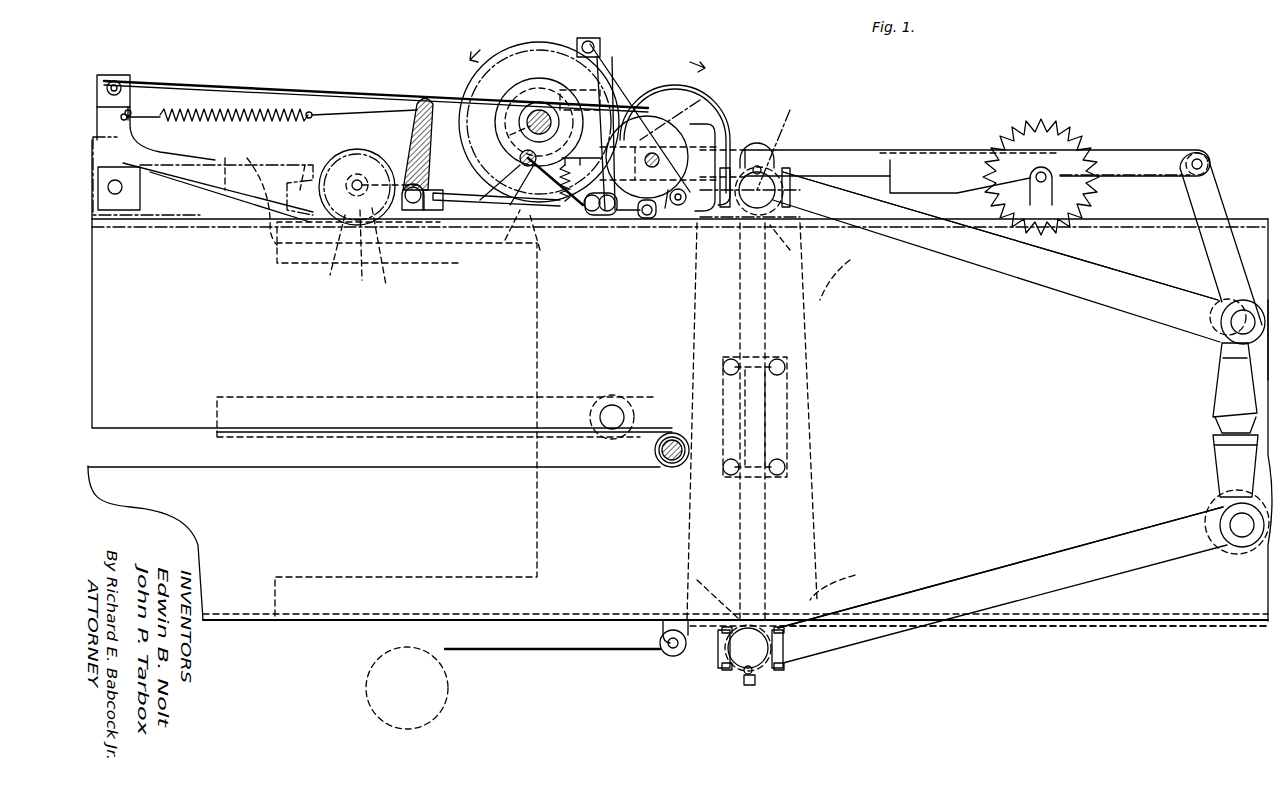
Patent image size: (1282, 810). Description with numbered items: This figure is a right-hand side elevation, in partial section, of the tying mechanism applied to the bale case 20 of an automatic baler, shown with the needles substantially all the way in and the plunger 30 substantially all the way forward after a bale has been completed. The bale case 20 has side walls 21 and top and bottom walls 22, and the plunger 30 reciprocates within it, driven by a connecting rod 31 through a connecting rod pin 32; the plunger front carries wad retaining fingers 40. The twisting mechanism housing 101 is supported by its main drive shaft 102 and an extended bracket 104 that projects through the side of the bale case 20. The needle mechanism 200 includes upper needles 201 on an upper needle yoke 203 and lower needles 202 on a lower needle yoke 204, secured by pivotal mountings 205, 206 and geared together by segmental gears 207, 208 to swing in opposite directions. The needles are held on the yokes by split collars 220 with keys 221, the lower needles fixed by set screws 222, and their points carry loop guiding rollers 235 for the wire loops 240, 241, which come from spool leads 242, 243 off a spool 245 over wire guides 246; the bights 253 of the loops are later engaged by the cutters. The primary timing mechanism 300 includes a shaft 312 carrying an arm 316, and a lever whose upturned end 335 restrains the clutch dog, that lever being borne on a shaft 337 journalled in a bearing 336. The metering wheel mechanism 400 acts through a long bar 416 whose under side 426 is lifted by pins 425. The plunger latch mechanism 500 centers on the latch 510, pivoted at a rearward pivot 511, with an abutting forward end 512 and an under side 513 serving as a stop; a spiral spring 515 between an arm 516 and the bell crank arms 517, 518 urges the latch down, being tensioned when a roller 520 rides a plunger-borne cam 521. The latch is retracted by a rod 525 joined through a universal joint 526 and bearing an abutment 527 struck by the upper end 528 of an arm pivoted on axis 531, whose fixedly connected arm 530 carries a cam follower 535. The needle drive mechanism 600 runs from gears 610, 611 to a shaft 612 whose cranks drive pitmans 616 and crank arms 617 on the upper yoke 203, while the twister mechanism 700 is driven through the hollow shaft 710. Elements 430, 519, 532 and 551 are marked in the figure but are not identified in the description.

The bale case 20 is at (978, 636).
The side walls 21 is at (548, 284).
The top and bottom walls 22 is at (1204, 340).
The plunger 30 is at (530, 458).
The connecting rod 31 is at (365, 436).
The connecting rod pin 32 is at (612, 395).
The wad retaining fingers 40 is at (845, 265).
The housing of the twisting mechanism 101 is at (677, 433).
The main drive shaft 102 is at (665, 462).
The extended bracket 104 is at (660, 452).
The needle mechanism 200 is at (808, 405).
The upper needles 201 is at (786, 249).
The lower needles 202 is at (778, 555).
The upper needle yoke 203 is at (996, 257).
The lower needle yoke 204 is at (1002, 585).
The pivotal mounting 205 is at (1240, 325).
The pivotal mounting 206 is at (1235, 520).
The segmental gear 207 is at (1215, 400).
The segmental gear 208 is at (1222, 458).
The split collars 220 is at (775, 172).
The keys 221 is at (758, 165).
The set screws 222 is at (760, 680).
The loop guiding rollers 235 is at (722, 365).
The wire loop 240 is at (795, 315).
The wire loop 241 is at (795, 515).
The spool lead 242 is at (602, 58).
The spool lead 243 is at (555, 650).
The spool 245 is at (449, 688).
The wire guides 246 is at (690, 208).
The bights 253 is at (765, 358).
The primary timing mechanism 300 is at (529, 122).
The shaft 312 is at (592, 218).
The arm 316 is at (662, 217).
The upturned end 335 is at (566, 205).
The bearing 336 is at (460, 192).
The shaft 337 is at (412, 205).
The metering wheel mechanism 400 is at (1036, 176).
The long bar 416 is at (888, 165).
The pins 425 is at (783, 142).
The under side 426 is at (700, 105).
The lever 430 is at (520, 205).
The plunger latch mechanism 500 is at (203, 176).
The latch 510 is at (207, 205).
The rearward pivot 511 is at (115, 194).
The abutting forward end 512 is at (247, 160).
The under side 513 is at (308, 162).
The spiral spring 515 is at (270, 107).
The upwardly extending arm 516 is at (132, 112).
The upwardly extending arm 517 is at (423, 100).
The bell crank arm 518 is at (330, 272).
The link 519 is at (353, 254).
The roller 520 is at (360, 152).
The plunger-borne cam 521 is at (389, 256).
The rod 525 is at (327, 91).
The universal joint 526 is at (122, 80).
The abutment 527 is at (585, 92).
The upper end 528 is at (610, 78).
The arm 530 is at (610, 216).
The axis 531 is at (600, 215).
The lever 532 is at (541, 239).
The cam follower 535 is at (645, 215).
The lever 551 is at (511, 231).
The needle drive mechanism 600 is at (683, 145).
The gear 610 is at (512, 80).
The gear 611 is at (695, 125).
The shaft 612 is at (653, 152).
The pitmans 616 is at (940, 152).
The crank arms 617 is at (1212, 198).
The twister mechanism 700 is at (526, 120).
The hollow shaft 710 is at (482, 122).